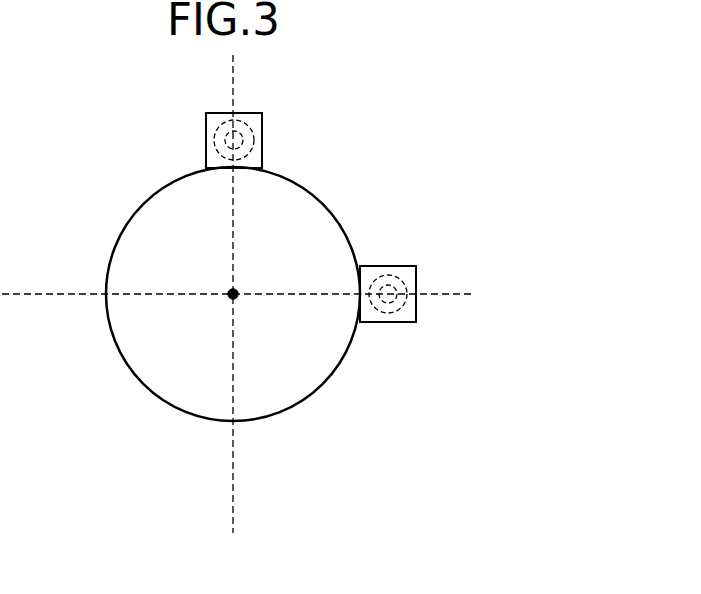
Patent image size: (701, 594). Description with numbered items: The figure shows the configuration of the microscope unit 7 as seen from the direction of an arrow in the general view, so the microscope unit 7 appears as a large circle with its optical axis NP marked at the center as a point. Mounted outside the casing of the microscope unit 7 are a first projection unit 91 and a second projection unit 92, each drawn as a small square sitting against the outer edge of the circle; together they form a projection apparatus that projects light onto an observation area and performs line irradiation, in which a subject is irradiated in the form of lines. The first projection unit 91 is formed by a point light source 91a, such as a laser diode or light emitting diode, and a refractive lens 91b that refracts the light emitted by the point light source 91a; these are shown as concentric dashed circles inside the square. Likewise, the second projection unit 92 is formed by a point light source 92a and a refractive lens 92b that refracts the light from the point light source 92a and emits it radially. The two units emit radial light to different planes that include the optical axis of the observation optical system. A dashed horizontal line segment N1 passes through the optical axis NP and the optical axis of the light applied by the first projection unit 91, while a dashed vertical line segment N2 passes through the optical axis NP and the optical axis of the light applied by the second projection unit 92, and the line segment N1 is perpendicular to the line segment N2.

The microscope unit 7 is at (148, 370).
The first projection unit 91 is at (391, 323).
The point light source 91a is at (393, 296).
The refractive lens 91b is at (386, 267).
The second projection unit 92 is at (263, 138).
The point light source 92a is at (209, 138).
The refractive lens 92b is at (249, 112).
The line segment N1 is at (450, 293).
The line segment N2 is at (231, 59).
The optical axis NP is at (236, 297).